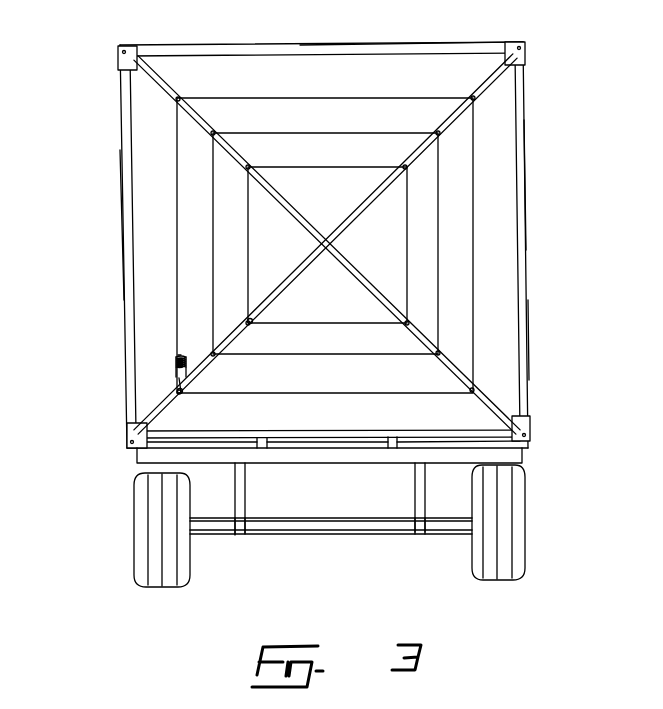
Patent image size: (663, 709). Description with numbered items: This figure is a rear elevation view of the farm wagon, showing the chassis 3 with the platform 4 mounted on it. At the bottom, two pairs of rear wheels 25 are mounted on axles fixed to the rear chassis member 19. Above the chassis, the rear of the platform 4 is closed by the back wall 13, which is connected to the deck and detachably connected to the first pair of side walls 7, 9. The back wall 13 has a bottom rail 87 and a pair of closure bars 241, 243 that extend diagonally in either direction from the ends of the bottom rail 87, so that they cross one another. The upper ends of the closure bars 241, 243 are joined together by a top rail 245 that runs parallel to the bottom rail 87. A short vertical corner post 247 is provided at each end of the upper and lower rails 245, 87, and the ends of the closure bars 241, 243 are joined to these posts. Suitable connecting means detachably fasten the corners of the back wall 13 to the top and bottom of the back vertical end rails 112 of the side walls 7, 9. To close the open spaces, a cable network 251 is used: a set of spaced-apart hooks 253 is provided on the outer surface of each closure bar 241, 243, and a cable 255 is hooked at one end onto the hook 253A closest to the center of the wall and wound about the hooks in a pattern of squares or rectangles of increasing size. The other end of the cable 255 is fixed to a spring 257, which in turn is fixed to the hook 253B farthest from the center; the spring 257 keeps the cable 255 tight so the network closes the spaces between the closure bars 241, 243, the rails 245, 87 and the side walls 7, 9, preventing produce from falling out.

The chassis 3 is at (396, 533).
The platform 4 is at (541, 246).
The first side wall 7 is at (122, 231).
The first side wall 9 is at (528, 176).
The back wall 13 is at (424, 20).
The rear chassis member 19 is at (273, 537).
The rear wheels 25 is at (145, 583).
The bottom rail 87 is at (292, 437).
The vertical end rail 112 is at (122, 172).
The closure bar 241 is at (357, 204).
The closure bar 243 is at (244, 157).
The top rail 245 is at (277, 44).
The vertical corner post 247 is at (118, 88).
The cable network 251 is at (170, 294).
The hooks 253 is at (215, 133).
The hook 253A is at (258, 320).
The hook 253B is at (184, 396).
The cable 255 is at (245, 247).
The spring 257 is at (175, 363).